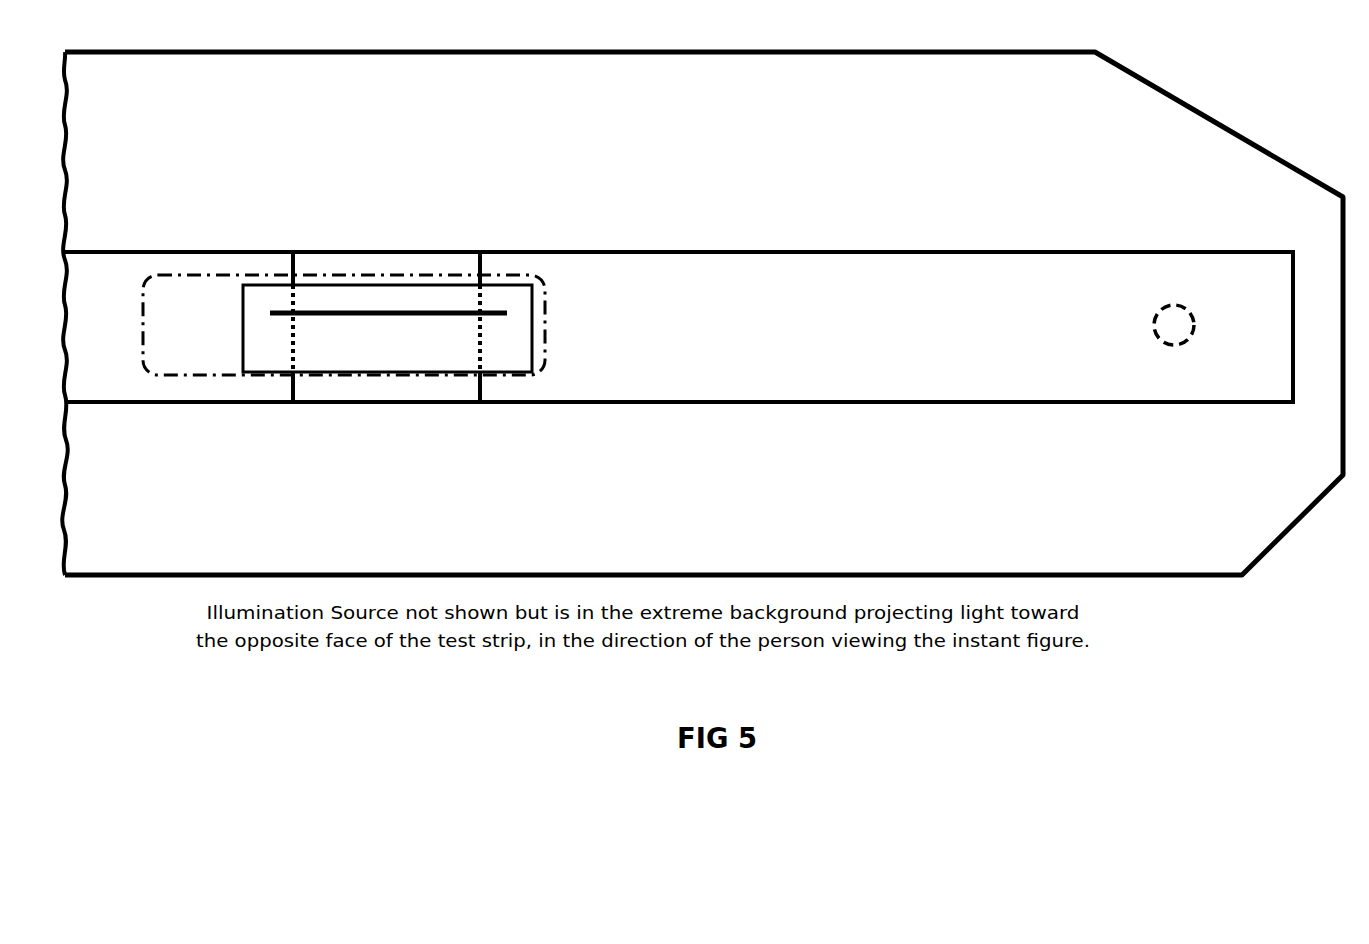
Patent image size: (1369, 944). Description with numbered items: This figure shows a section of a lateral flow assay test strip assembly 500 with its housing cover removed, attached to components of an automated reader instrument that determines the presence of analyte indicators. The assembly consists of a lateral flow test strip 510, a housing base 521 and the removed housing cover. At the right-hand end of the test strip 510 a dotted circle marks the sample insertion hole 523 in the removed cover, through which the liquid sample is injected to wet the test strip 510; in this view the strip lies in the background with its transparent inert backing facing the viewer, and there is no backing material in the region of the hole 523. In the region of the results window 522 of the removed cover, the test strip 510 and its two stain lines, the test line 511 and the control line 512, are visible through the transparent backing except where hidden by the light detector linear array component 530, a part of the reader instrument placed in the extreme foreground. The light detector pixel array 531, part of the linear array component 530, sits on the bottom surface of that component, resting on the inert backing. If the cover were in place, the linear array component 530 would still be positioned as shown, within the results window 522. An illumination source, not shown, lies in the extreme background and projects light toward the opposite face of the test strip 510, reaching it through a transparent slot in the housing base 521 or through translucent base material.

The lateral flow assay test strip assembly section 500 is at (1229, 102).
The lateral flow test strip 510 is at (679, 327).
The stain line 511 is at (487, 238).
The stain line 512 is at (300, 238).
The housing base 521 is at (955, 491).
The results window 522 is at (192, 258).
The sample insertion hole 523 is at (1156, 285).
The light detector linear array component 530 is at (545, 361).
The light detector pixel array 531 is at (342, 330).